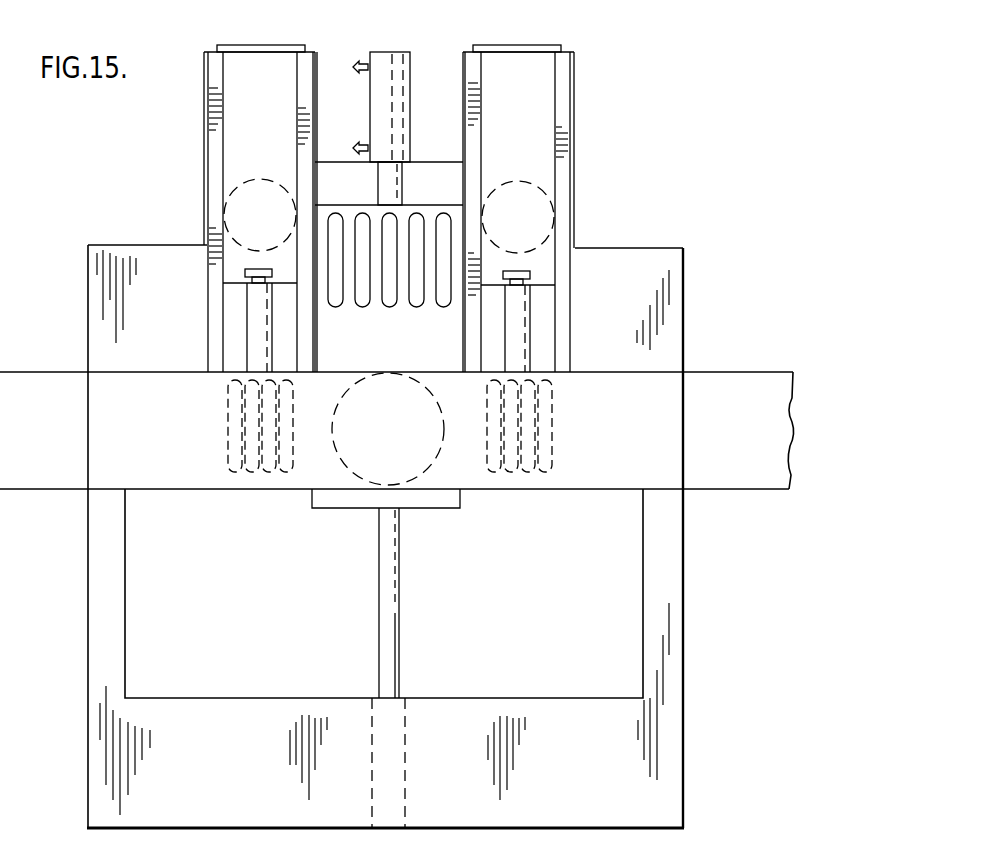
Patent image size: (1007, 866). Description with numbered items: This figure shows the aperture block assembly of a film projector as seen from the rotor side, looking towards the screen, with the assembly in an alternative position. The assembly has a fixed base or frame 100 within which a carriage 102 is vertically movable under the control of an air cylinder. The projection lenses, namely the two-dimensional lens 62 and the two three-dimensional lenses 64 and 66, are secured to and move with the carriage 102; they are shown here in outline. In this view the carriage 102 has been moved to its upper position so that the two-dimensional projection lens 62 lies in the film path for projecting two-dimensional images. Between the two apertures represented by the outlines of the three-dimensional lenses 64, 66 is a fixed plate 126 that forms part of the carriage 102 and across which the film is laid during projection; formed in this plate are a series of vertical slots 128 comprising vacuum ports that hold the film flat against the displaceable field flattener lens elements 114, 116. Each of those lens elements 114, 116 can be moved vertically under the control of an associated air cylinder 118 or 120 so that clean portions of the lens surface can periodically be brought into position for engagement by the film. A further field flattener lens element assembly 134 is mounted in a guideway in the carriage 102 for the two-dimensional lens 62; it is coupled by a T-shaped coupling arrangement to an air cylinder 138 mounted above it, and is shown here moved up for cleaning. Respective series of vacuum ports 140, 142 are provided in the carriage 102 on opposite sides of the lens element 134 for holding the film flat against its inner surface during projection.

The 2-D projection lens 62 is at (440, 424).
The 3-D projection lens 64 is at (222, 206).
The 3-D projection lens 66 is at (556, 217).
The fixed base or frame 100 is at (688, 700).
The carriage 102 is at (586, 199).
The field flattener lens element 114 is at (275, 62).
The field flattener lens element 116 is at (540, 92).
The air cylinder 118 is at (243, 322).
The air cylinder 120 is at (535, 330).
The fixed plate 126 is at (440, 212).
The vertical slots 128 is at (440, 302).
The field flattener lens element assembly 134 is at (335, 502).
The air cylinder 138 is at (418, 79).
The vacuum ports 140 is at (226, 417).
The vacuum ports 142 is at (556, 415).